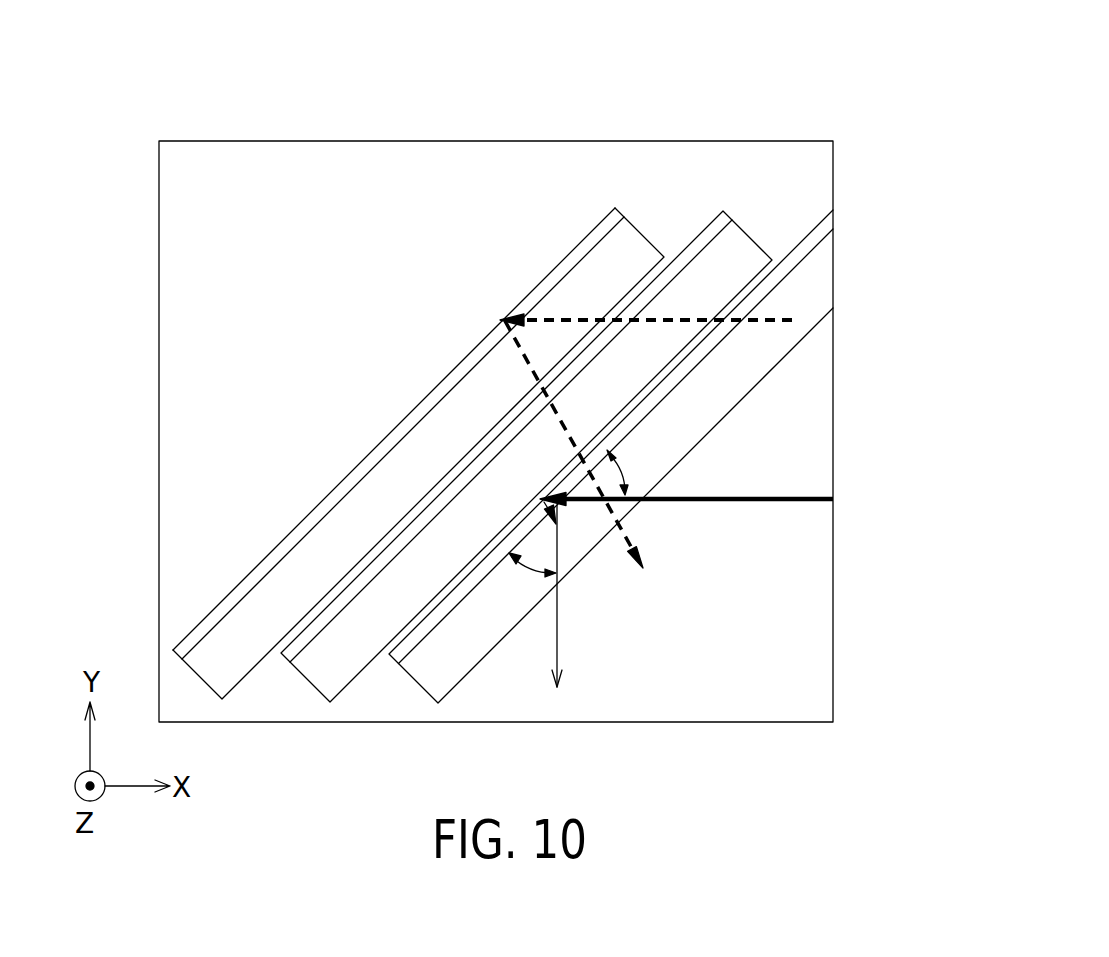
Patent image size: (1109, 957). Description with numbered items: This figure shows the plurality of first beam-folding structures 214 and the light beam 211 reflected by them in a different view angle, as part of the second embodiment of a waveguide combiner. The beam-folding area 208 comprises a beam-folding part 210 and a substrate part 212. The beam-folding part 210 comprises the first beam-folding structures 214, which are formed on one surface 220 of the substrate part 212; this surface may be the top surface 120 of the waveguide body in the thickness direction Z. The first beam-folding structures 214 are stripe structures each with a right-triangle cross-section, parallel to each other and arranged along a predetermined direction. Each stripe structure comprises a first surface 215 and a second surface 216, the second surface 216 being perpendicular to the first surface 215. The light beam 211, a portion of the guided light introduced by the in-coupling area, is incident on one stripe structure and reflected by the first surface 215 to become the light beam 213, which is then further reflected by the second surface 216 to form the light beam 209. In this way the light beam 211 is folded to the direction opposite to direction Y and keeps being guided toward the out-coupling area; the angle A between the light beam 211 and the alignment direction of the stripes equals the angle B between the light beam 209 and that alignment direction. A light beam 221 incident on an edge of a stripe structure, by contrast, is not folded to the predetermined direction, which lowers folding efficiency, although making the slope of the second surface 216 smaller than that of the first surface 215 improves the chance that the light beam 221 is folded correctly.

The beam-folding area 208 is at (830, 73).
The surface 120 is at (823, 670).
The substrate part 212 is at (198, 400).
The beam-folding part 210 is at (518, 208).
The first beam-folding structures 214 is at (592, 243).
The first surface 215 is at (468, 370).
The second surface 216 is at (433, 428).
The surface 220 is at (823, 283).
The light beam 221 is at (763, 322).
The light beam 211 is at (753, 502).
The light beam 213 is at (562, 507).
The light beam 209 is at (557, 652).